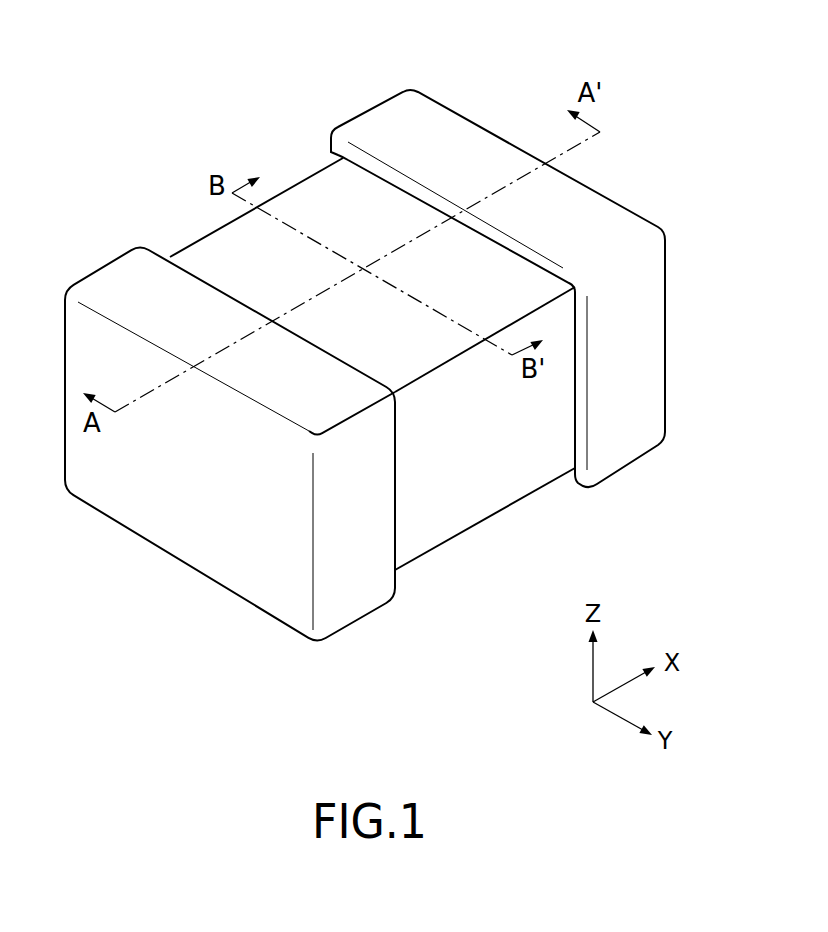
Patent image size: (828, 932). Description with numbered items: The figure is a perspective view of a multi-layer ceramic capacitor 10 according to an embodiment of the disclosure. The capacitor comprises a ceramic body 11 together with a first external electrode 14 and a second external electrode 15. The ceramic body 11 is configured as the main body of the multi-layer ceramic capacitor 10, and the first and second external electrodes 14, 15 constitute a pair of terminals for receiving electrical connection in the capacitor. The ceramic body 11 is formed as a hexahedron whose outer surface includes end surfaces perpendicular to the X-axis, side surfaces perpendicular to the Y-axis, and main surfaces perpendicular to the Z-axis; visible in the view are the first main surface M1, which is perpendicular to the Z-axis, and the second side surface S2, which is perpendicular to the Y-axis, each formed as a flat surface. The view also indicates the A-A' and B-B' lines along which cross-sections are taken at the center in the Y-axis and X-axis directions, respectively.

The multi-layer ceramic capacitor 10 is at (365, 327).
The ceramic body 11 is at (357, 302).
The first external electrode 14 is at (127, 277).
The second external electrode 15 is at (383, 135).
The first main surface M1 is at (456, 286).
The second side surface S2 is at (511, 448).